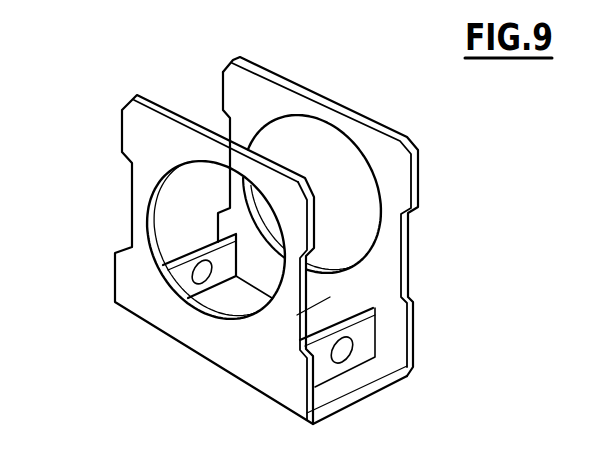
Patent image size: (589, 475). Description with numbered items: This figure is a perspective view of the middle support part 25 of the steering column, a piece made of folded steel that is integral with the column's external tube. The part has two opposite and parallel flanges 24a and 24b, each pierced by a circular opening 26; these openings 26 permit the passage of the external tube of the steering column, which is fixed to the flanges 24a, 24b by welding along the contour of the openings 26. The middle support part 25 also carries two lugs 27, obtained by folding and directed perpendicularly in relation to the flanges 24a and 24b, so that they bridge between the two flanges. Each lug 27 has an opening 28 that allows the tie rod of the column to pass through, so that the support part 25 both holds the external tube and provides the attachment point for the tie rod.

The flange 24a is at (133, 123).
The flange 24b is at (393, 168).
The middle support part 25 is at (171, 94).
The circular opening 26 is at (368, 198).
The lug 27 is at (365, 348).
The opening 28 is at (332, 340).